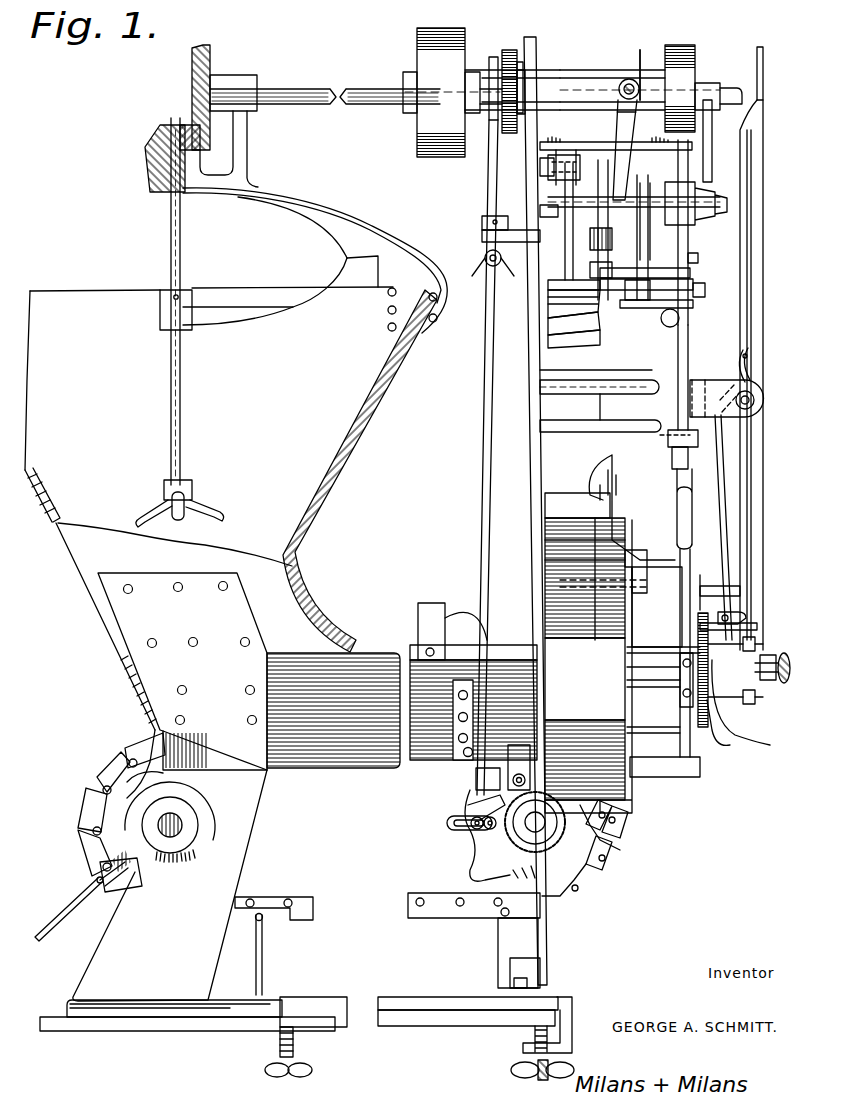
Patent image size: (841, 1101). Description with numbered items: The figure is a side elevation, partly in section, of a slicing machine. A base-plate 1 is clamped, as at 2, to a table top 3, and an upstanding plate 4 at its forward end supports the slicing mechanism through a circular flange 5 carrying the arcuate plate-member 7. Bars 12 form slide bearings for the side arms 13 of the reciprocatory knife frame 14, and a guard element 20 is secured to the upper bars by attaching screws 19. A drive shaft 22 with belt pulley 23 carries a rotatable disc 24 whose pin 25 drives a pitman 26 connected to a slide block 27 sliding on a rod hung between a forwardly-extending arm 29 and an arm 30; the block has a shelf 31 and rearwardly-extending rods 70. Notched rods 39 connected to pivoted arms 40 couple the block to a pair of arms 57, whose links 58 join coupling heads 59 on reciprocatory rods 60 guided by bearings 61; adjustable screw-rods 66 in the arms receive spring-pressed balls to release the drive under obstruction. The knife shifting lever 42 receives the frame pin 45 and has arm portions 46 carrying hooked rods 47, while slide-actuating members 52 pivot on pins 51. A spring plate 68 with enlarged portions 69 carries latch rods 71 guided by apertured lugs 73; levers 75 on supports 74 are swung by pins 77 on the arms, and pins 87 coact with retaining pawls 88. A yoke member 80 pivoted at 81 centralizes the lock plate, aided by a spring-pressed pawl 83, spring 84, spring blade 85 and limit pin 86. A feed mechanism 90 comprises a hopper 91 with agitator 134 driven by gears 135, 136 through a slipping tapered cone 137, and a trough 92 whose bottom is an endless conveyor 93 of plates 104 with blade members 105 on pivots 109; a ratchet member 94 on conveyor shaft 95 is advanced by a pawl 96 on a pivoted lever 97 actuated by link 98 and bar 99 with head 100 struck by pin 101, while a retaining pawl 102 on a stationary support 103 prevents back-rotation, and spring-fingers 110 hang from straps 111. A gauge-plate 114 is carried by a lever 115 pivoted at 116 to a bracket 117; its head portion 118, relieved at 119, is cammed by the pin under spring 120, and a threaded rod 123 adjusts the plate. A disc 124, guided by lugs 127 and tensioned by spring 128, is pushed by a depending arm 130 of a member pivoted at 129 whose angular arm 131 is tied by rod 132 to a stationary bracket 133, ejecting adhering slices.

The base-plate 1 is at (404, 998).
The clamp 2 is at (572, 1020).
The table top 3 is at (430, 1024).
The upstanding plate 4 is at (550, 958).
The circular flange 5 is at (588, 653).
The arcuate plate-member 7 is at (603, 632).
The bars 12 is at (657, 568).
The side arms 13 is at (657, 607).
The knife frame 14 is at (668, 500).
The attaching screws 19 is at (748, 562).
The guard element 20 is at (700, 592).
The drive shaft 22 is at (355, 104).
The belt pulley 23 is at (438, 152).
The rotatable disc 24 is at (680, 45).
The pin 25 is at (724, 86).
The drive pitman 26 is at (710, 180).
The slide block 27 is at (725, 212).
The forwardly-extending arm 29 is at (578, 158).
The arm 30 is at (698, 260).
The shelf 31 is at (655, 221).
The rods 39 is at (688, 258).
The pivoted arm 40 is at (662, 283).
The knife shifting lever 42 is at (622, 410).
The pin 45 is at (582, 586).
The arm portions 46 is at (548, 322).
The rods 47 is at (609, 236).
The pins 51 is at (596, 373).
The slide-actuating members 52 is at (692, 245).
The arms 57 is at (706, 291).
The link 58 is at (690, 362).
The coupling head 59 is at (667, 451).
The reciprocatory rod 60 is at (600, 380).
The bearings 61 is at (580, 407).
The adjustable screw-rods 66 is at (681, 323).
The spring plate 68 is at (567, 154).
The enlarged portions 69 is at (545, 170).
The rearwardly-extending rods 70 is at (548, 200).
The latch rods 71 is at (548, 210).
The apertured lugs 73 is at (545, 232).
The supports 74 is at (548, 300).
The levers 75 is at (548, 283).
The pins 77 is at (548, 340).
The yoke member 80 is at (640, 50).
The pivot 81 is at (626, 80).
The spring-pressed pawl 83 is at (640, 182).
The spring 84 is at (581, 221).
The spring blade 85 is at (612, 100).
The pin 86 is at (630, 145).
The pins 87 is at (530, 82).
The retaining pawls 88 is at (695, 304).
The feed mechanism 90 is at (392, 785).
The hopper 91 is at (346, 452).
The trough 92 is at (372, 715).
The endless conveyor 93 is at (145, 748).
The ratchet member 94 is at (462, 845).
The conveyor shaft 95 is at (545, 825).
The pawl 96 is at (468, 805).
The pivoted lever 97 is at (447, 826).
The link 98 is at (485, 458).
The bar 99 is at (493, 229).
The angularly-extending head 100 is at (489, 58).
The pin 101 is at (500, 78).
The retaining pawl 102 is at (476, 772).
The stationary support 103 is at (515, 760).
The plates 104 is at (275, 912).
The blade members 105 is at (72, 918).
The pivots 109 is at (102, 890).
The spring-fingers 110 is at (462, 610).
The straps 111 is at (424, 620).
The gauge-plate 114 is at (732, 732).
The lever 115 is at (760, 517).
The pivot 116 is at (754, 405).
The bracket 117 is at (759, 398).
The head portion 118 is at (764, 102).
The removed portion 119 is at (764, 62).
The spring 120 is at (752, 378).
The externally-threaded rod 123 is at (780, 684).
The disc 124 is at (746, 704).
The apertured lugs 127 is at (752, 636).
The spring 128 is at (774, 773).
The pivot 129 is at (748, 616).
The depending arm 130 is at (740, 657).
The angular-extending arm 131 is at (700, 627).
The rod 132 is at (727, 555).
The stationary bracket 133 is at (713, 375).
The agitator 134 is at (184, 383).
The gear 135 is at (193, 58).
The gear element 136 is at (182, 128).
The tapered cone 137 is at (150, 142).